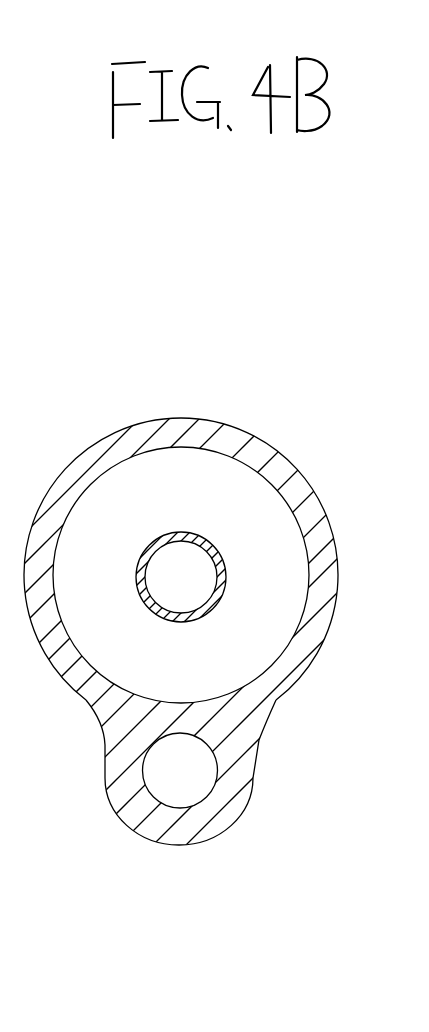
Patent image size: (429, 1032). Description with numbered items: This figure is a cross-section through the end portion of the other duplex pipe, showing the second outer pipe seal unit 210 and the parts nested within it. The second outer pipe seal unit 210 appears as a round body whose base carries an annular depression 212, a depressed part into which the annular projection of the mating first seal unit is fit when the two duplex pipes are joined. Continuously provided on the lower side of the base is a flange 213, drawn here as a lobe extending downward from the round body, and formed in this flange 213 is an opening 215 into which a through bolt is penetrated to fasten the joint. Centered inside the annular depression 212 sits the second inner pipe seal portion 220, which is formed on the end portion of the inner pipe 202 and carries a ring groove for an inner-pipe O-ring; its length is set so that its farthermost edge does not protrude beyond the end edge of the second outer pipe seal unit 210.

The second outer pipe seal unit 210 is at (238, 425).
The annular depression 212 is at (200, 482).
The flange 213 is at (183, 825).
The opening 215 is at (183, 776).
The second inner pipe seal portion 220 is at (140, 530).
The inner pipe 202 is at (193, 580).